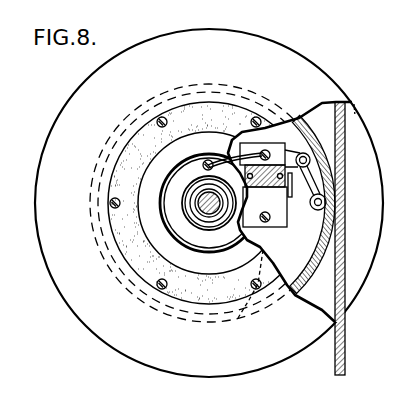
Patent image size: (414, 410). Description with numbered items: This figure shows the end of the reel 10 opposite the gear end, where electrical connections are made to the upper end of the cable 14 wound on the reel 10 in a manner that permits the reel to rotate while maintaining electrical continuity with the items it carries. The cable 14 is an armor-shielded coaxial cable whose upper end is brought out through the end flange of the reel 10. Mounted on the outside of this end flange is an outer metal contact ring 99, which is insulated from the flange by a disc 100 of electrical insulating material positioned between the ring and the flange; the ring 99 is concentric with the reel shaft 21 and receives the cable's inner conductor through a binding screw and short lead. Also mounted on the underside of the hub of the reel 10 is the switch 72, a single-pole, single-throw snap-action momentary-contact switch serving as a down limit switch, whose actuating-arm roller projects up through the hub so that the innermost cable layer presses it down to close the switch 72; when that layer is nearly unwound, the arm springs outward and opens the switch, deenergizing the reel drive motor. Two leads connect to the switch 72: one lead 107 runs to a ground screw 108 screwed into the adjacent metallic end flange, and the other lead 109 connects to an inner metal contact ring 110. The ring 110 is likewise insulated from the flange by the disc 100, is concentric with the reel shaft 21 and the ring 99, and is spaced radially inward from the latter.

The reel 10 is at (292, 58).
The cable 14 is at (347, 350).
The reel shaft 21 is at (205, 206).
The switch 72 is at (277, 207).
The outer metal contact ring 99 is at (203, 133).
The disc 100 is at (155, 130).
The lead 107 is at (266, 222).
The ground screw 108 is at (257, 290).
The lead 109 is at (237, 133).
The inner metal contact ring 110 is at (185, 175).